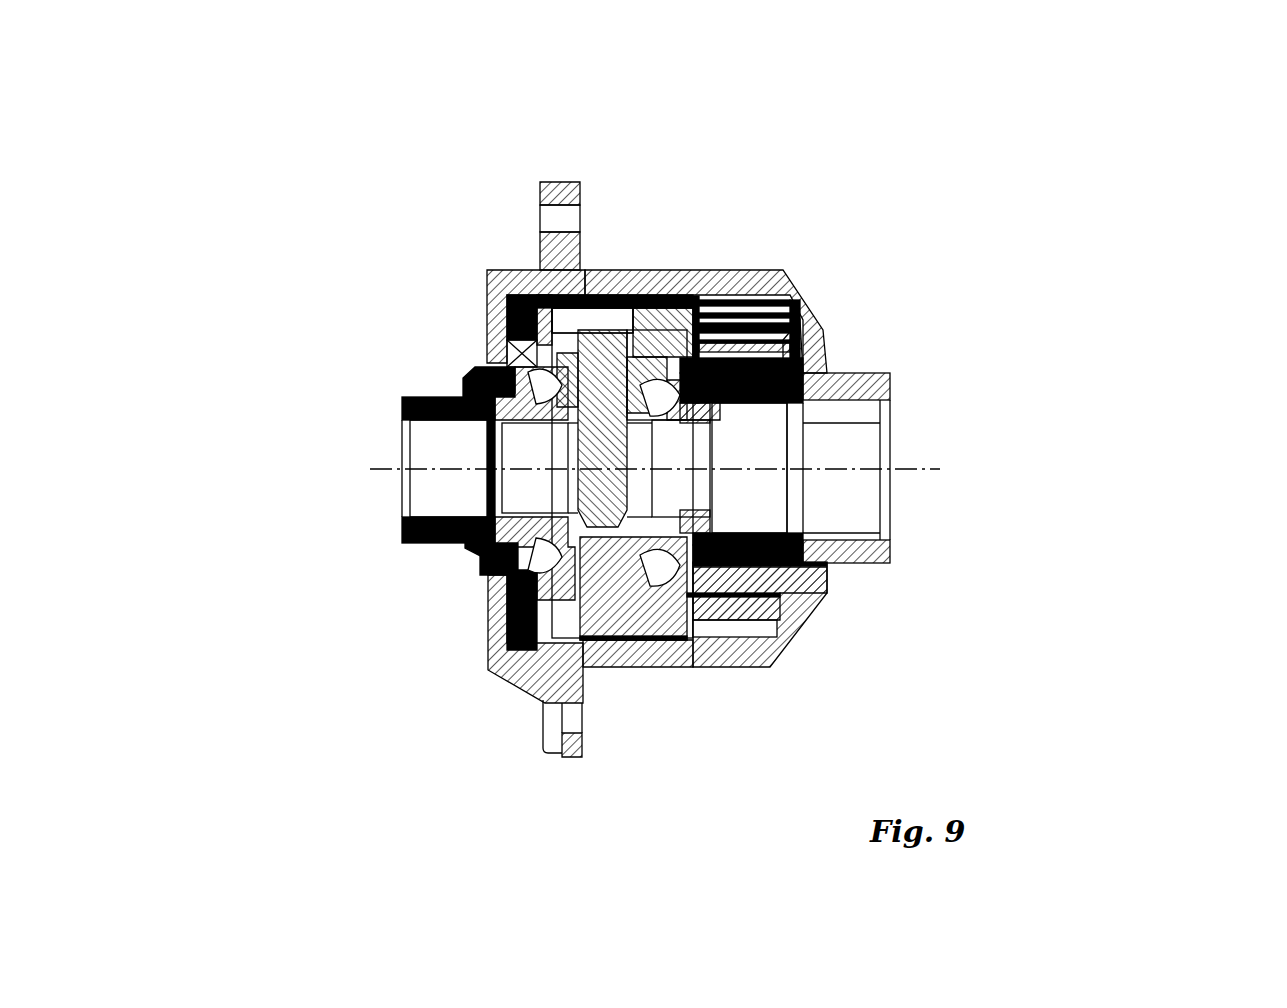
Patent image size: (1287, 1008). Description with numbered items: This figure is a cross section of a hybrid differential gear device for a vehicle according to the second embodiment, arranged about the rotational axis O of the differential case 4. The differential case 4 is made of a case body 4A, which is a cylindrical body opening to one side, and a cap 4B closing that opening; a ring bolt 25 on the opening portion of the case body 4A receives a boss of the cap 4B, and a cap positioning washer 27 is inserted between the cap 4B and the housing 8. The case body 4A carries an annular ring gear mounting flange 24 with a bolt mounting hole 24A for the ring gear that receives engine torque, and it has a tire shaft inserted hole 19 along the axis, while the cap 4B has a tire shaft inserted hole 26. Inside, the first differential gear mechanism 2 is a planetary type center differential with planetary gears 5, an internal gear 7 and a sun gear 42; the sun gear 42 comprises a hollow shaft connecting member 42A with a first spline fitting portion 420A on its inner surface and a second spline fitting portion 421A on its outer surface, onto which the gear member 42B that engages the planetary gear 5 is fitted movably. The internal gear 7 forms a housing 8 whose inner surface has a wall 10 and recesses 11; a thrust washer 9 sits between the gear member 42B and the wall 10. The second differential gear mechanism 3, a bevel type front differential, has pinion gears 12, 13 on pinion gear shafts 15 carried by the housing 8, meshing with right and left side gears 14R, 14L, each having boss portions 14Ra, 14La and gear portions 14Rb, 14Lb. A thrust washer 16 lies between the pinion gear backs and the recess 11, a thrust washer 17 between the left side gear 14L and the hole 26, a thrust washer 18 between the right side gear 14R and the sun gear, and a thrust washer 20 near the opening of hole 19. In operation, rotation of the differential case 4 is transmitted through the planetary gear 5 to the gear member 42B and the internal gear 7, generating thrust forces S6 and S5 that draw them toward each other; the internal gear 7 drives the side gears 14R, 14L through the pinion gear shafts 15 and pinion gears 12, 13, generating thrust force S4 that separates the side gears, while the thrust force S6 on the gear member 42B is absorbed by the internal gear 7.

The first differential gear mechanism 2 is at (725, 300).
The second differential gear mechanism 3 is at (597, 270).
The differential case 4 is at (482, 511).
The case body 4A is at (502, 688).
The cap 4B is at (473, 588).
The planetary gear 5 is at (770, 325).
The internal gear 7 is at (740, 305).
The housing 8 is at (620, 270).
The thrust washer 9 is at (717, 635).
The wall 10 is at (650, 330).
The recess 11 is at (560, 312).
The pinion gear 12 is at (562, 362).
The pinion gear 13 is at (605, 605).
The left side gear 14L is at (510, 398).
The boss portion 14La is at (468, 384).
The gear portion 14Lb is at (540, 378).
The right side gear 14R is at (687, 640).
The boss portion 14Ra is at (762, 582).
The gear portion 14Rb is at (652, 600).
The pinion gear shaft 15 is at (592, 330).
The thrust washer 16 is at (650, 272).
The thrust washer 17 is at (478, 565).
The thrust washer 18 is at (752, 612).
The tire shaft inserted hole 19 is at (792, 408).
The thrust washer 20 is at (792, 568).
The ring gear mounting flange 24 is at (550, 182).
The bolt mounting hole 24A is at (548, 215).
The ring bolt 25 is at (515, 312).
The tire shaft inserted hole 26 is at (452, 438).
The cap positioning washer 27 is at (515, 343).
The sun gear 42 is at (977, 332).
The shaft connecting member 42A is at (805, 385).
The gear member 42B is at (800, 365).
The first spline fitting portion 420A is at (832, 412).
The second spline fitting portion 421A is at (795, 347).
The rotational axis O is at (912, 470).
The thrust force S4 is at (680, 405).
The thrust force S5 is at (672, 300).
The thrust force S6 is at (740, 405).